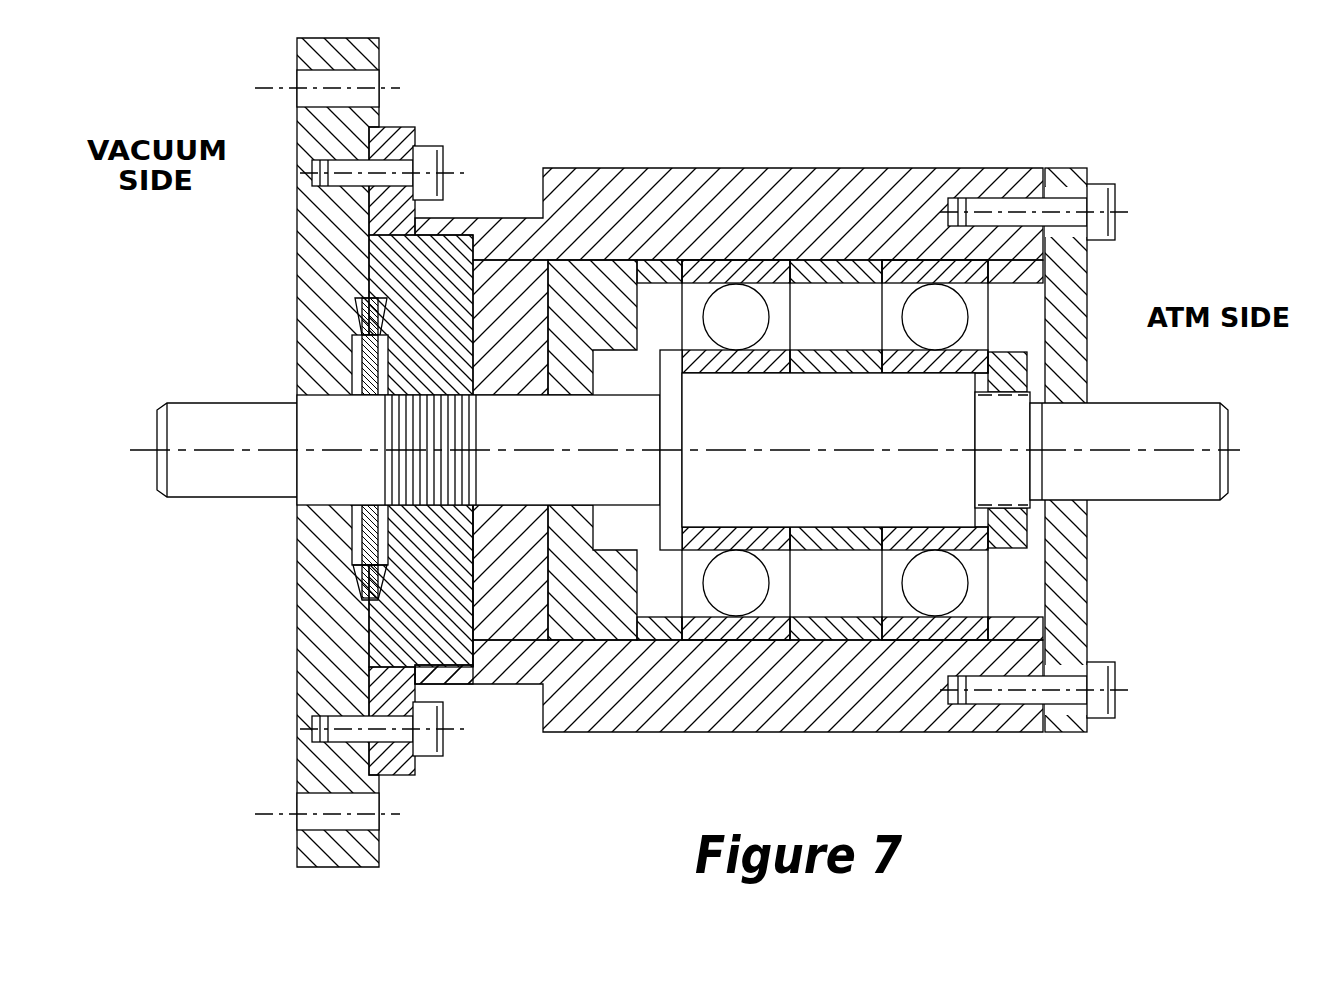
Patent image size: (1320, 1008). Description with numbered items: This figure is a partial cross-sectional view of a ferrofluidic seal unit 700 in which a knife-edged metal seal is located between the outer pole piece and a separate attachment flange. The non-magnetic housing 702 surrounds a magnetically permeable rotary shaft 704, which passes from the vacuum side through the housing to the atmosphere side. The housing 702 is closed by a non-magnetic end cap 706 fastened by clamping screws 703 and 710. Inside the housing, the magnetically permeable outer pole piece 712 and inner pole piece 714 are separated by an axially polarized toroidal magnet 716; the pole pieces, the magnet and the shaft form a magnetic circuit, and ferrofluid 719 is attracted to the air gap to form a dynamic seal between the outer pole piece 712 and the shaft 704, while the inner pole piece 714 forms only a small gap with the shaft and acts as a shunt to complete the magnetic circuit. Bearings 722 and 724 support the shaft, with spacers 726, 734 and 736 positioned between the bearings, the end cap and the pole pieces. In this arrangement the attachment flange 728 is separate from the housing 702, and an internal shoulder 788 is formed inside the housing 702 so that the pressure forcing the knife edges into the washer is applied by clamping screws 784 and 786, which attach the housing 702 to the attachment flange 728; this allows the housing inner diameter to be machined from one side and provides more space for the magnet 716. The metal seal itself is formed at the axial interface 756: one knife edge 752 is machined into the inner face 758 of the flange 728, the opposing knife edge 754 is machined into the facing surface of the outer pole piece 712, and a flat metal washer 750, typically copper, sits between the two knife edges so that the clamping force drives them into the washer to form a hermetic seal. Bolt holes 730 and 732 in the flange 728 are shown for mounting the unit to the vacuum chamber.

The ferrofluidic seal unit 700 is at (1003, 148).
The housing 702 is at (793, 697).
The clamping screw 703 is at (1098, 203).
The rotary shaft 704 is at (1163, 487).
The end cap 706 is at (1073, 560).
The clamping screw 710 is at (1112, 673).
The outer pole piece 712 is at (385, 272).
The inner pole piece 714 is at (618, 278).
The magnet 716 is at (520, 578).
The ferrofluid 719 is at (442, 445).
The bearing 722 is at (765, 273).
The bearing 724 is at (910, 273).
The spacer 726 is at (660, 630).
The attachment flange 728 is at (360, 851).
The flange bolt hole 730 is at (308, 79).
The flange bolt hole 732 is at (308, 808).
The spacer 734 is at (867, 628).
The spacer 736 is at (1015, 630).
The metal flat washer 750 is at (355, 334).
The knife edge 752 is at (353, 566).
The knife edge 754 is at (453, 678).
The axial interface 756 is at (372, 606).
The inner face 758 is at (360, 296).
The clamping screw 784 is at (428, 152).
The clamping screw 786 is at (425, 746).
The internal shoulder 788 is at (472, 625).